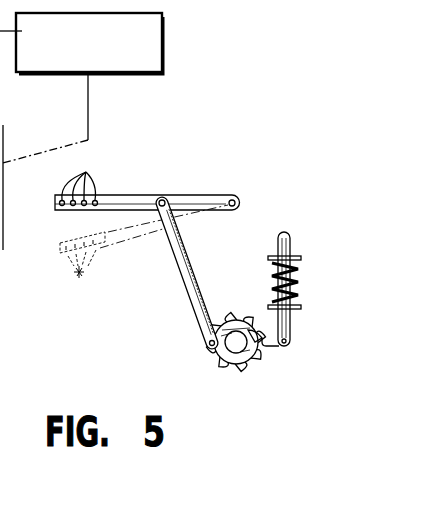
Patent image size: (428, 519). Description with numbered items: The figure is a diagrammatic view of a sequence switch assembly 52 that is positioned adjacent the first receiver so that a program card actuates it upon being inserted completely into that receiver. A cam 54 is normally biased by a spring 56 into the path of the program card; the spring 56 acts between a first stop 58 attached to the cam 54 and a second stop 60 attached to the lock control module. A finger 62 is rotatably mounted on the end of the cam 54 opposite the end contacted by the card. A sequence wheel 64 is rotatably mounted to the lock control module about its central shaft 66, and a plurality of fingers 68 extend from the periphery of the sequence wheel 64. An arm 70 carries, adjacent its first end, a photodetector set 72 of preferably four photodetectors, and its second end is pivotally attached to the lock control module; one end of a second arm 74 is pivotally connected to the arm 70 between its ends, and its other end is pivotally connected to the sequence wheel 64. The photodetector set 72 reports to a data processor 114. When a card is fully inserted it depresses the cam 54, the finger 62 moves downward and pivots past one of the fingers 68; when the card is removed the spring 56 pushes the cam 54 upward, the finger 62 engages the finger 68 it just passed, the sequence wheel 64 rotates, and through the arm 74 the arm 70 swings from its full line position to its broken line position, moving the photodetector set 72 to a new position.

The data processor 114 is at (0, 87).
The arm 70 is at (136, 197).
The photodetector set 72 is at (90, 170).
The arm 74 is at (190, 279).
The cam 54 is at (290, 244).
The spring 56 is at (270, 286).
The first stop 58 is at (270, 257).
The second stop 60 is at (300, 310).
The sequence switch assembly 52 is at (312, 299).
The finger 62 is at (283, 350).
The sequence wheel 64 is at (232, 372).
The central shaft 66 is at (237, 342).
The fingers 68 is at (268, 352).